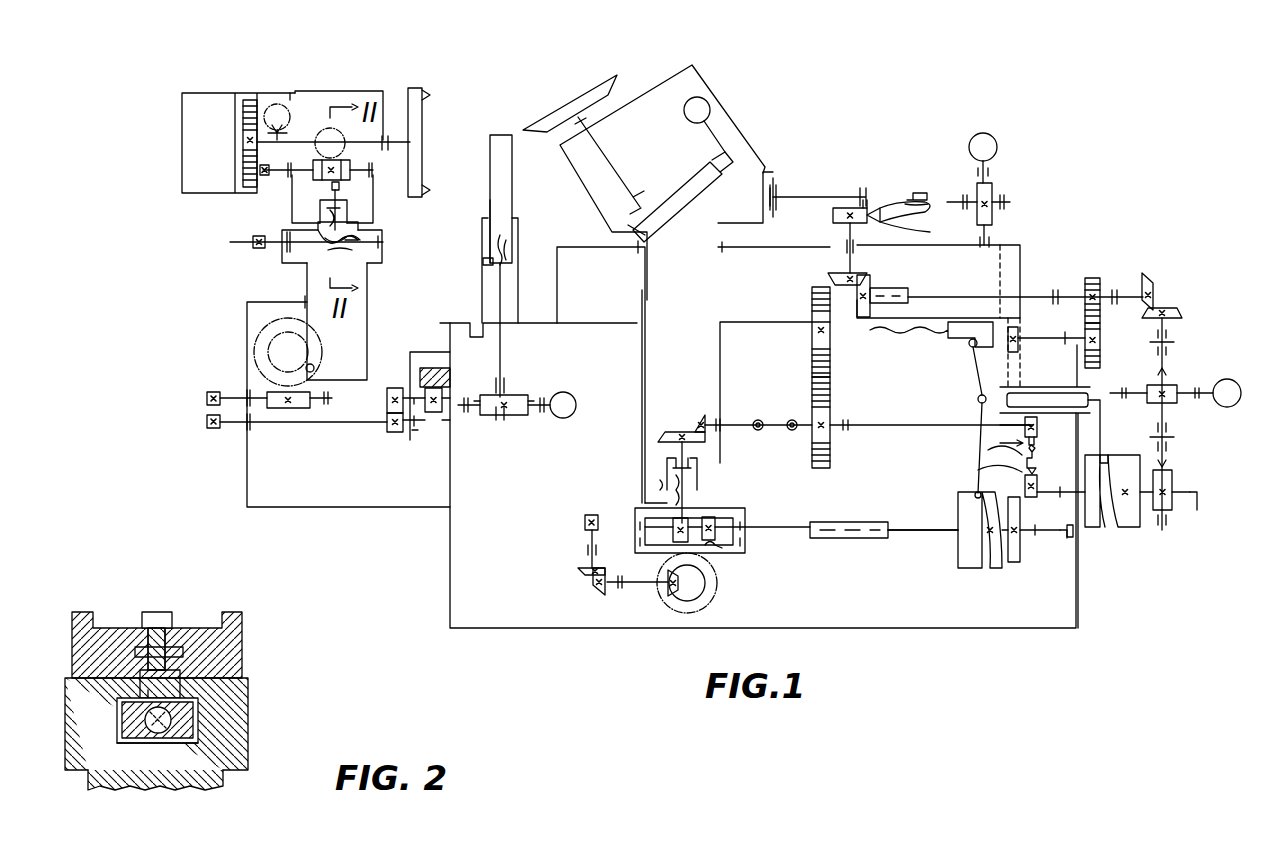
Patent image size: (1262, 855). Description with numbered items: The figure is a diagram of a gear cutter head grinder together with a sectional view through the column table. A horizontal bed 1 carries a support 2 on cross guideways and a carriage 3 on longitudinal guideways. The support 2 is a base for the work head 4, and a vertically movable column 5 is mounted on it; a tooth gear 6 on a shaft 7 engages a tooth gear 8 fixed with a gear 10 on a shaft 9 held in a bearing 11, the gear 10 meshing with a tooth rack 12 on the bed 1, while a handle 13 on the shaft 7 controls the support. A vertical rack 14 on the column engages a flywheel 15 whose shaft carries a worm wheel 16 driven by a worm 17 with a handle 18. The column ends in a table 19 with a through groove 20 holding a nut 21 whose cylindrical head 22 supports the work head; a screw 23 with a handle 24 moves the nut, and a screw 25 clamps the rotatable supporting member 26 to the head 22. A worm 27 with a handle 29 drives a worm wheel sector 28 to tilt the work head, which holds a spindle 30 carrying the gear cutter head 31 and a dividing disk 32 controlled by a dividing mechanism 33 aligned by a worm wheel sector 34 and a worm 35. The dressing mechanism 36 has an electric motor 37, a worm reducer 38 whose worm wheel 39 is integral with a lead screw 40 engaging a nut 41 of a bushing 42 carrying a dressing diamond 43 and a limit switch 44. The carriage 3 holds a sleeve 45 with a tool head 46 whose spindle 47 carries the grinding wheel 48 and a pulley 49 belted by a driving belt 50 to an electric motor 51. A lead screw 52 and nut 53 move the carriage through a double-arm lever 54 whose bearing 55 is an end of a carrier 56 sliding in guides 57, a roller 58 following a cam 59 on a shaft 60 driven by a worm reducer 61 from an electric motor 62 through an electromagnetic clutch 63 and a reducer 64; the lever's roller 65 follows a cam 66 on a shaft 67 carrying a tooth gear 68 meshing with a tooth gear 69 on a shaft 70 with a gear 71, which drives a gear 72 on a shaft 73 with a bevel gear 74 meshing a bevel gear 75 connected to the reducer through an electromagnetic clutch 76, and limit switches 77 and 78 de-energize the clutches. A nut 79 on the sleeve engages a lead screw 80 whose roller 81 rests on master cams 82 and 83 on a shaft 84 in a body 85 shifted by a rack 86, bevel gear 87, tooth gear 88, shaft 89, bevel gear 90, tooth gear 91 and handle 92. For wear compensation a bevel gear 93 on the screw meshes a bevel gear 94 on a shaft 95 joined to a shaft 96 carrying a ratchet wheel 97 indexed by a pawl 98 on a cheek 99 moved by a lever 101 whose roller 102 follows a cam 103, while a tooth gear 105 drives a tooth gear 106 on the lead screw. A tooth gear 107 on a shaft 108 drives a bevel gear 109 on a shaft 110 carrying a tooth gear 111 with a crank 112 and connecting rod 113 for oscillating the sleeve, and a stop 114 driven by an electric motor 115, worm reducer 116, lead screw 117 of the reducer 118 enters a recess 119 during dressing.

In FIG. 1, the bed 1 is at (455, 520).
In FIG. 1, the support 2 is at (247, 302).
In FIG. 1, the carriage 3 is at (1008, 246).
In FIG. 1, the work head 4 is at (332, 110).
In FIG. 1, the column 5 is at (307, 283).
In FIG. 2, the column 5 is at (230, 782).
In FIG. 1, the tooth gear 6 is at (386, 440).
In FIG. 1, the shaft 7 is at (332, 423).
In FIG. 1, the tooth gear 8 is at (393, 388).
In FIG. 1, the shaft 9 is at (410, 393).
In FIG. 1, the gear 10 is at (433, 413).
In FIG. 1, the bearing 11 is at (407, 440).
In FIG. 1, the tooth rack 12 is at (430, 368).
In FIG. 1, the handle 13 is at (206, 423).
In FIG. 1, the rack 14 is at (315, 366).
In FIG. 1, the flywheel 15 is at (268, 352).
In FIG. 1, the worm wheel 16 is at (256, 362).
In FIG. 1, the worm 17 is at (288, 410).
In FIG. 1, the handle 18 is at (206, 393).
In FIG. 1, the table 19 is at (383, 258).
In FIG. 2, the table 19 is at (230, 706).
In FIG. 1, the through groove 20 is at (360, 255).
In FIG. 2, the through groove 20 is at (120, 738).
In FIG. 1, the nut 21 is at (312, 250).
In FIG. 2, the nut 21 is at (195, 734).
In FIG. 1, the cylindrical head 22 is at (328, 216).
In FIG. 2, the cylindrical head 22 is at (178, 648).
In FIG. 1, the screw 23 is at (362, 242).
In FIG. 2, the screw 23 is at (150, 718).
In FIG. 1, the handle 24 is at (230, 244).
In FIG. 1, the screw 25 is at (306, 199).
In FIG. 2, the screw 25 is at (148, 612).
In FIG. 1, the supporting member 26 is at (373, 201).
In FIG. 2, the supporting member 26 is at (78, 650).
In FIG. 1, the worm 27 is at (350, 200).
In FIG. 1, the worm wheel sector 28 is at (355, 173).
In FIG. 1, the handle 29 is at (265, 178).
In FIG. 1, the spindle 30 is at (316, 130).
In FIG. 1, the gear cutter head 31 is at (425, 100).
In FIG. 1, the dividing disk 32 is at (250, 100).
In FIG. 1, the dividing mechanism 33 is at (182, 112).
In FIG. 1, the worm wheel sector 34 is at (283, 106).
In FIG. 1, the worm 35 is at (276, 104).
In FIG. 1, the dressing mechanism 36 is at (515, 178).
In FIG. 1, the electric motor 37 is at (565, 392).
In FIG. 1, the worm reducer 38 is at (491, 427).
In FIG. 1, the worm wheel 39 is at (528, 397).
In FIG. 1, the lead screw 40 is at (500, 362).
In FIG. 1, the nut 41 is at (518, 272).
In FIG. 1, the bushing 42 is at (490, 158).
In FIG. 1, the dressing diamond 43 is at (500, 135).
In FIG. 1, the limit switch 44 is at (483, 263).
In FIG. 1, the sleeve 45 is at (722, 282).
In FIG. 1, the tool head 46 is at (638, 100).
In FIG. 1, the spindle 47 is at (618, 170).
In FIG. 1, the grinding wheel 48 is at (566, 118).
In FIG. 1, the pulley 49 is at (626, 222).
In FIG. 1, the driving belt 50 is at (672, 188).
In FIG. 1, the electric motor 51 is at (712, 114).
In FIG. 1, the lead screw 52 is at (968, 322).
In FIG. 1, the nut 53 is at (1000, 318).
In FIG. 1, the double-arm lever 54 is at (977, 440).
In FIG. 1, the bearing 55 is at (978, 396).
In FIG. 1, the carrier 56 is at (1058, 393).
In FIG. 1, the guides 57 is at (1038, 386).
In FIG. 1, the roller 58 is at (1106, 455).
In FIG. 1, the cam 59 is at (1128, 530).
In FIG. 1, the shaft 60 is at (1040, 498).
In FIG. 1, the worm reducer 61 is at (1174, 480).
In FIG. 1, the electric motor 62 is at (1232, 379).
In FIG. 1, the electromagnetic clutch 63 is at (1174, 440).
In FIG. 1, the reducer 64 is at (1178, 388).
In FIG. 1, the roller 65 is at (975, 494).
In FIG. 1, the cam 66 is at (960, 556).
In FIG. 1, the shaft 67 is at (905, 528).
In FIG. 1, the tooth gear 68 is at (1014, 562).
In FIG. 1, the tooth gear 69 is at (1018, 330).
In FIG. 1, the shaft 70 is at (1058, 338).
In FIG. 1, the gear 71 is at (1100, 336).
In FIG. 1, the gear 72 is at (1093, 278).
In FIG. 1, the shaft 73 is at (1036, 295).
In FIG. 1, the bevel gear 74 is at (1155, 284).
In FIG. 1, the bevel gear 75 is at (1180, 310).
In FIG. 1, the electromagnetic clutch 76 is at (1174, 342).
In FIG. 1, the limit switch 77 is at (1195, 515).
In FIG. 1, the limit switch 78 is at (1073, 532).
In FIG. 1, the nut 79 is at (635, 514).
In FIG. 1, the lead screw 80 is at (665, 478).
In FIG. 1, the roller 81 is at (697, 485).
In FIG. 1, the master cam 82 is at (688, 520).
In FIG. 1, the master cam 83 is at (716, 520).
In FIG. 1, the shaft 84 is at (792, 522).
In FIG. 1, the body 85 is at (735, 508).
In FIG. 1, the rack 86 is at (712, 552).
In FIG. 1, the bevel gear 87 is at (660, 600).
In FIG. 1, the tooth gear 88 is at (700, 590).
In FIG. 1, the shaft 89 is at (622, 592).
In FIG. 1, the bevel gear 90 is at (594, 594).
In FIG. 1, the tooth gear 91 is at (578, 571).
In FIG. 1, the handle 92 is at (585, 520).
In FIG. 1, the bevel gear 93 is at (676, 432).
In FIG. 1, the bevel gear 94 is at (703, 412).
In FIG. 1, the shaft 95 is at (740, 423).
In FIG. 1, the shaft 96 is at (880, 424).
In FIG. 1, the ratchet wheel 97 is at (1037, 428).
In FIG. 1, the pawl 98 is at (1036, 462).
In FIG. 1, the cheek 99 is at (1008, 442).
In FIG. 1, the lever 101 is at (988, 450).
In FIG. 1, the roller 102 is at (978, 470).
In FIG. 1, the cam 103 is at (1058, 535).
In FIG. 1, the tooth gear 105 is at (812, 396).
In FIG. 1, the tooth gear 106 is at (812, 354).
In FIG. 1, the tooth gear 107 is at (872, 285).
In FIG. 1, the shaft 108 is at (908, 292).
In FIG. 1, the bevel gear 109 is at (832, 275).
In FIG. 1, the shaft 110 is at (848, 230).
In FIG. 1, the tooth gear 111 is at (840, 206).
In FIG. 1, the crank 112 is at (865, 200).
In FIG. 1, the connecting rod 113 is at (796, 192).
In FIG. 1, the stop 114 is at (930, 225).
In FIG. 1, the electric motor 115 is at (983, 132).
In FIG. 1, the worm reducer 116 is at (994, 192).
In FIG. 1, the lead screw 117 is at (953, 196).
In FIG. 1, the reducer 118 is at (918, 193).
In FIG. 1, the recess 119 is at (876, 210).